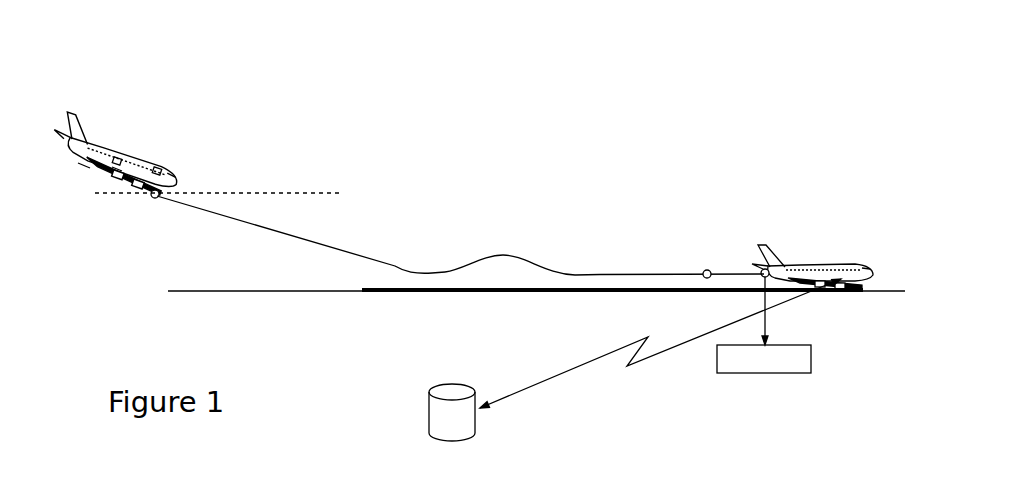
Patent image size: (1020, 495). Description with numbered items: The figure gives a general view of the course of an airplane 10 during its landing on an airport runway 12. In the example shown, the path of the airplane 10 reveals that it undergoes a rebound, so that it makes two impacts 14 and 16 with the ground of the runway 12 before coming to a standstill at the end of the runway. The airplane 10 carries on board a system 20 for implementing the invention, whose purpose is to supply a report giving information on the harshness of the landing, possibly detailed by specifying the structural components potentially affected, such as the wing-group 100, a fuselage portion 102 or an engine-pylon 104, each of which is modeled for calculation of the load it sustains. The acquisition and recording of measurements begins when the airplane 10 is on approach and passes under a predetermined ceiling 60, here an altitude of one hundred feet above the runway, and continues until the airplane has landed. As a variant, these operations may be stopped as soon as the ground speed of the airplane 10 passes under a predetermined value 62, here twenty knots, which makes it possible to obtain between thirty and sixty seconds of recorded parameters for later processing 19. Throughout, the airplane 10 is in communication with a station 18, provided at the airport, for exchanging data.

The airplane 10 is at (106, 120).
The wing-group 100 is at (118, 162).
The system 20 is at (157, 170).
The fuselage portion 102 is at (78, 163).
The engine-pylon 104 is at (112, 167).
The predetermined ceiling 60 is at (356, 191).
The first impact 14 is at (428, 256).
The second impact 16 is at (570, 256).
The predetermined value 62 is at (707, 266).
The runway 12 is at (443, 293).
The later processing 19 is at (764, 326).
The station 18 is at (455, 440).